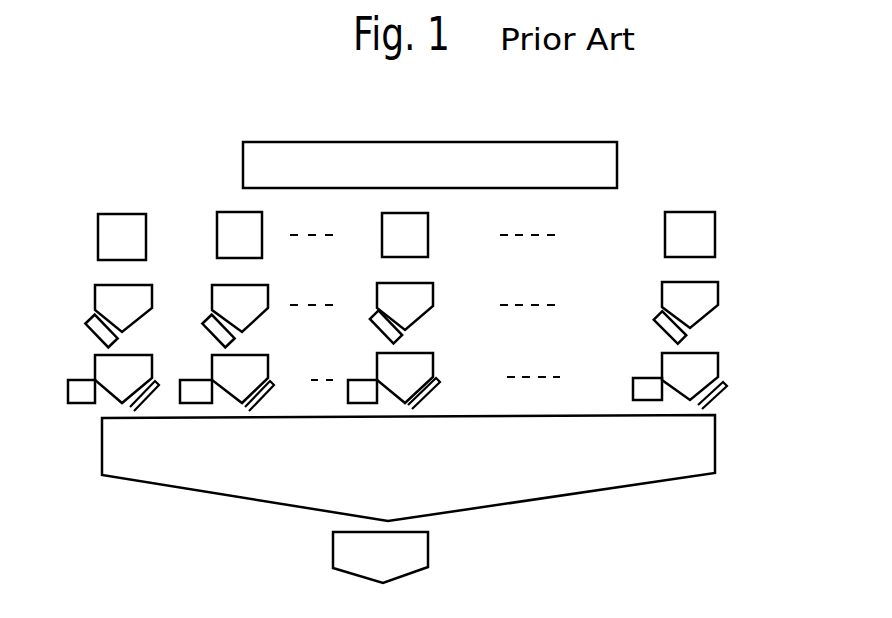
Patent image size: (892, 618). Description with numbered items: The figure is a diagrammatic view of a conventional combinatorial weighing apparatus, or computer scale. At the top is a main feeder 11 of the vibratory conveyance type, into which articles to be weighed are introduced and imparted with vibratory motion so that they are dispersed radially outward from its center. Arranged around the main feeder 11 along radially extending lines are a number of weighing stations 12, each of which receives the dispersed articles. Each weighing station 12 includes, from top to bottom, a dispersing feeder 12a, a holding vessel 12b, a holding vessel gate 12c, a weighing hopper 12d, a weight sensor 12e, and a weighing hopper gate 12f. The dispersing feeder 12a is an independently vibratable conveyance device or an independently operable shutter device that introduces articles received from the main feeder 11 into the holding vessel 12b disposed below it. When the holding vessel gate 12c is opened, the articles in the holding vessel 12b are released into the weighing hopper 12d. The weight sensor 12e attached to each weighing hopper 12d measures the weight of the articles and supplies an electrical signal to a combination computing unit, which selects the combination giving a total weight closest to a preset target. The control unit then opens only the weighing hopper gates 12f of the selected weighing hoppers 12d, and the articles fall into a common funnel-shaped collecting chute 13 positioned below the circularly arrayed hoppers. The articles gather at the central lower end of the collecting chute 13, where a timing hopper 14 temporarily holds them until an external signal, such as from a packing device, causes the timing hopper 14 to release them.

The main feeder 11 is at (440, 147).
The weighing station 12 is at (84, 178).
The dispersing feeder 12a is at (120, 217).
The holding vessel 12b is at (101, 286).
The holding vessel gate 12c is at (88, 318).
The weighing hopper 12d is at (100, 363).
The weight sensor 12e is at (75, 404).
The weighing hopper gate 12f is at (140, 406).
The collecting chute 13 is at (540, 500).
The timing hopper 14 is at (428, 552).